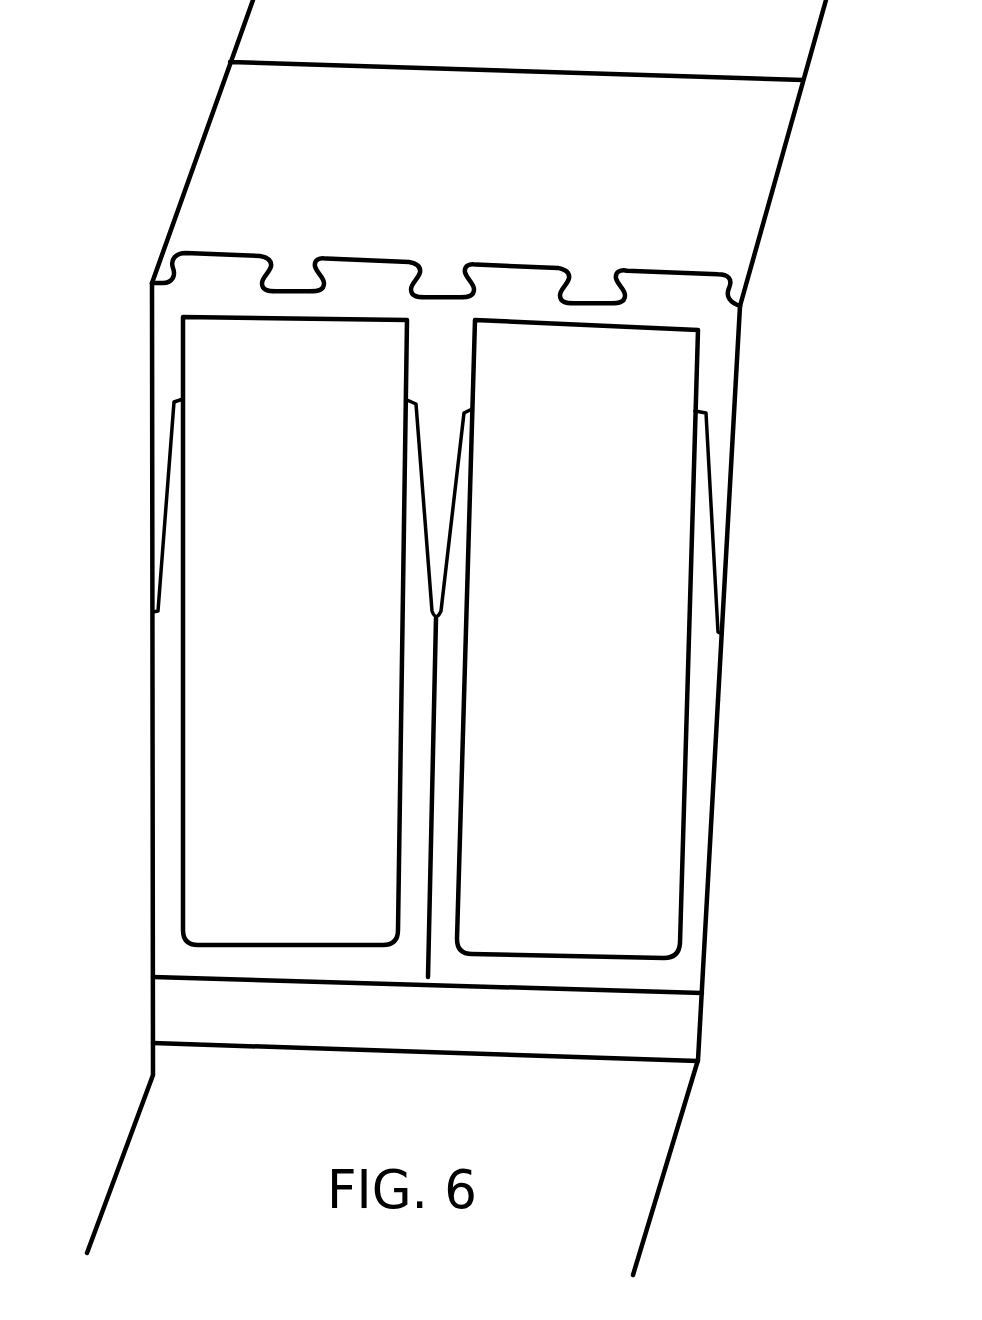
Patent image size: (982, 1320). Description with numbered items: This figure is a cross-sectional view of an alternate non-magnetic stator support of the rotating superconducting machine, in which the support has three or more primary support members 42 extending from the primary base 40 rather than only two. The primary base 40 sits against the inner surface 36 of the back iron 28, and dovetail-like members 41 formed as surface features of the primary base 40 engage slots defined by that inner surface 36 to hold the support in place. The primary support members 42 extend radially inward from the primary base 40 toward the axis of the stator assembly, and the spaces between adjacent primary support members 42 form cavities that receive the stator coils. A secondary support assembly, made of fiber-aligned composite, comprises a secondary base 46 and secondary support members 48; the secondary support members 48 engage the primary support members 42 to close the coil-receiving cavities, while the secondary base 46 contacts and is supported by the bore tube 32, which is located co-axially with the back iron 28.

The back iron 28 is at (484, 157).
The bore tube 32 is at (389, 1022).
The inner surface 36 is at (687, 277).
The primary base 40 is at (148, 318).
The dovetail-like member 41 is at (148, 412).
The primary support member 42 is at (403, 488).
The secondary base 46 is at (705, 960).
The secondary support member 48 is at (720, 682).